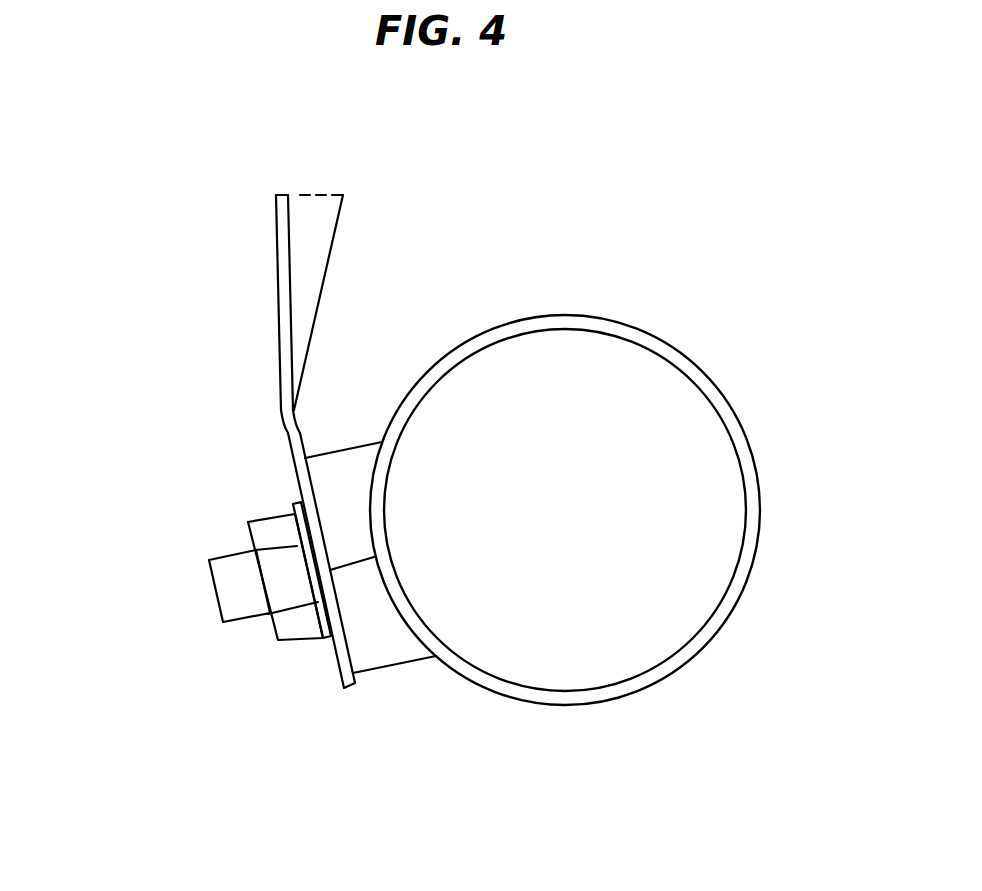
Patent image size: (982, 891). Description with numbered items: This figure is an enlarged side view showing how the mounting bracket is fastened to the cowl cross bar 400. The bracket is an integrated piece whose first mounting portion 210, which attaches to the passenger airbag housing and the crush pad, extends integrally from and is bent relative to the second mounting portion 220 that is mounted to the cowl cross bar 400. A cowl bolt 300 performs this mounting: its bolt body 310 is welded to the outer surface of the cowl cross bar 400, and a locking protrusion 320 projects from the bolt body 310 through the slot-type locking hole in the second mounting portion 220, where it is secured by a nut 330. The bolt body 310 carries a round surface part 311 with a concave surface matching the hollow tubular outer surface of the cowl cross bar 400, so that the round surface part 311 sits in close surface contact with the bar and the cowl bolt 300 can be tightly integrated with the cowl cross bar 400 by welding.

The first mounting portion 210 is at (310, 237).
The second mounting portion 220 is at (287, 443).
The cowl bolt 300 is at (398, 664).
The bolt body 310 is at (368, 590).
The round surface part 311 is at (417, 633).
The locking protrusion 320 is at (245, 600).
The nut 330 is at (280, 572).
The cowl cross bar 400 is at (697, 647).